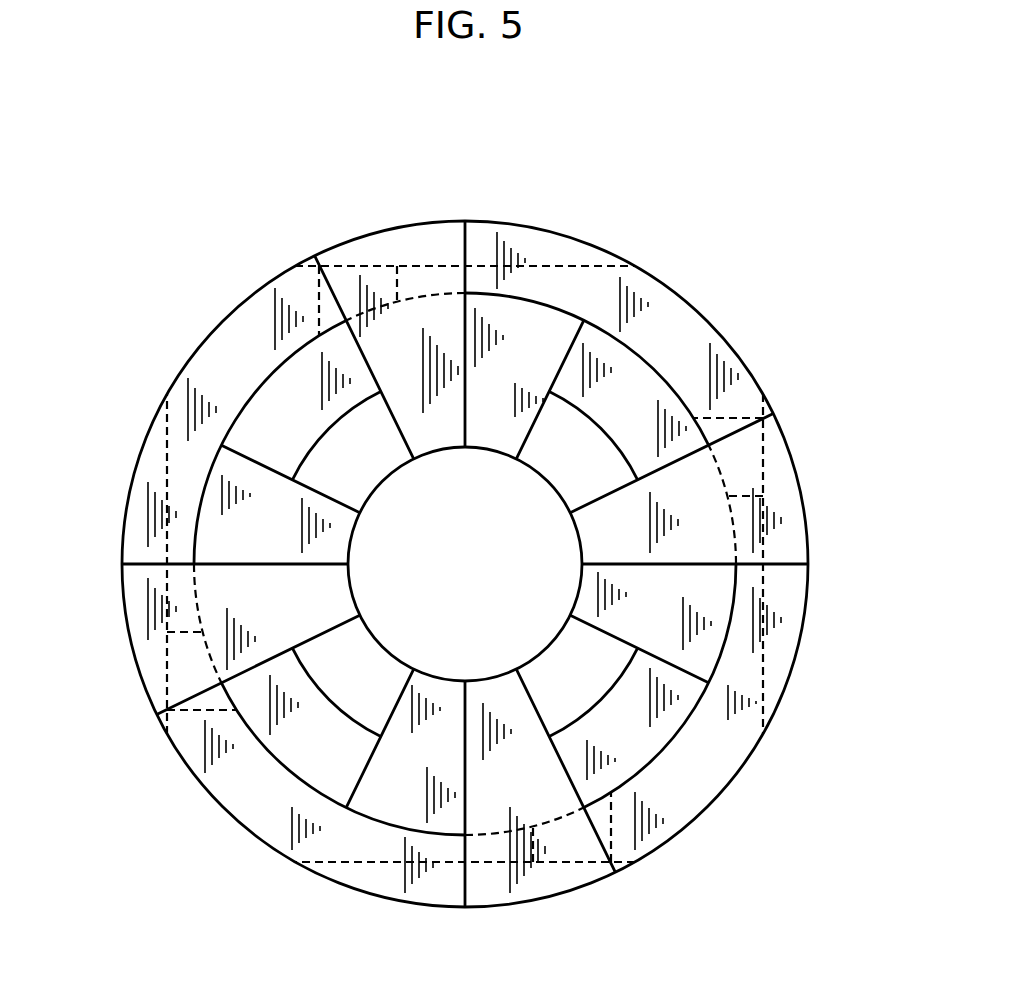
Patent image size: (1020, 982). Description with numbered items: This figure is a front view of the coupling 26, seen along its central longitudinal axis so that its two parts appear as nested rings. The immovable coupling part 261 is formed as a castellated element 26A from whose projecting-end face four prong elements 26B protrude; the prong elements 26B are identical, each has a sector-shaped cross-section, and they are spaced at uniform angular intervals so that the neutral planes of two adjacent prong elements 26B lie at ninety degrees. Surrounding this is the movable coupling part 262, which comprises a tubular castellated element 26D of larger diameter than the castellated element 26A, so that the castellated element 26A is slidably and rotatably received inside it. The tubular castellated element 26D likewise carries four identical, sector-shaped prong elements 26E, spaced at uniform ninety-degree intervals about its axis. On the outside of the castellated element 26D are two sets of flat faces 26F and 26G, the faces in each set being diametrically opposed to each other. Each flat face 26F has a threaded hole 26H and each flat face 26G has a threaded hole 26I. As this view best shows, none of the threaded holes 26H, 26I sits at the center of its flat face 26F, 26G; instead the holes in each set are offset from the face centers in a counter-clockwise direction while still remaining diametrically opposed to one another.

The coupling 26 is at (469, 570).
The immovable coupling part 261 is at (693, 735).
The movable coupling part 262 is at (729, 312).
The castellated element 26A is at (619, 397).
The prong elements 26B is at (252, 493).
The tubular castellated element 26D is at (653, 808).
The prong elements 26E is at (430, 437).
The flat faces 26F is at (165, 470).
The flat faces 26G is at (562, 266).
The threaded hole 26H is at (187, 667).
The threaded hole 26I is at (365, 268).